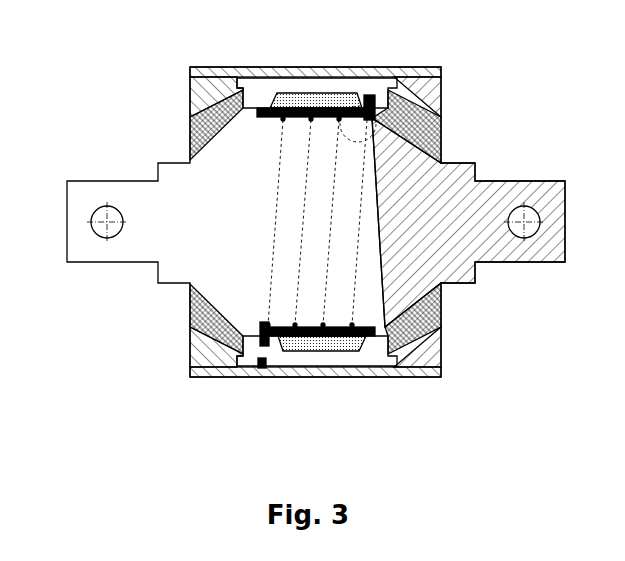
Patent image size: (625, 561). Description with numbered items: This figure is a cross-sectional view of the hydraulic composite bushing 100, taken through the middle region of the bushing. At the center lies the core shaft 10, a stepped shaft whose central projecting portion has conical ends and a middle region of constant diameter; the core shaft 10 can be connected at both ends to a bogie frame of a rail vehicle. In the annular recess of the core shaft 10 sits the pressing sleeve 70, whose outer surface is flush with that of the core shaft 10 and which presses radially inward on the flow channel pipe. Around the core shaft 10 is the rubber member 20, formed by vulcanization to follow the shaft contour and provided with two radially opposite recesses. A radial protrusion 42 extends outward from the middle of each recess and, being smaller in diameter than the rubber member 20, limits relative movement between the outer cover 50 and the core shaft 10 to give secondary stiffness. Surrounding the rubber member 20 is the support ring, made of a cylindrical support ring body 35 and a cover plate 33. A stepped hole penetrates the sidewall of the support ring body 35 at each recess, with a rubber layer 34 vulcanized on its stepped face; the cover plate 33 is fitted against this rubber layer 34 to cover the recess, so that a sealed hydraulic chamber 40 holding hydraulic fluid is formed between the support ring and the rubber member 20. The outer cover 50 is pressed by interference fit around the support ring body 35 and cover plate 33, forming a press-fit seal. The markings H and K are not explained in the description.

The hydraulic composite bushing 100 is at (90, 26).
The core shaft 10 is at (455, 193).
The rubber member 20 is at (303, 92).
The cover plate 33 is at (360, 375).
The rubber layer 34 is at (390, 362).
The support ring body 35 is at (433, 67).
The hydraulic chamber 40 is at (268, 97).
The radial protrusion 42 is at (329, 353).
The outer cover 50 is at (211, 66).
The pressing sleeve 70 is at (334, 108).
The bonding block H is at (376, 100).
The connecting block K is at (263, 370).